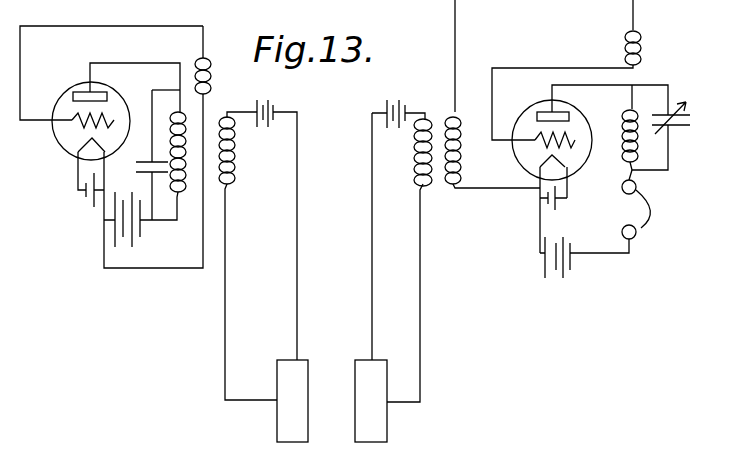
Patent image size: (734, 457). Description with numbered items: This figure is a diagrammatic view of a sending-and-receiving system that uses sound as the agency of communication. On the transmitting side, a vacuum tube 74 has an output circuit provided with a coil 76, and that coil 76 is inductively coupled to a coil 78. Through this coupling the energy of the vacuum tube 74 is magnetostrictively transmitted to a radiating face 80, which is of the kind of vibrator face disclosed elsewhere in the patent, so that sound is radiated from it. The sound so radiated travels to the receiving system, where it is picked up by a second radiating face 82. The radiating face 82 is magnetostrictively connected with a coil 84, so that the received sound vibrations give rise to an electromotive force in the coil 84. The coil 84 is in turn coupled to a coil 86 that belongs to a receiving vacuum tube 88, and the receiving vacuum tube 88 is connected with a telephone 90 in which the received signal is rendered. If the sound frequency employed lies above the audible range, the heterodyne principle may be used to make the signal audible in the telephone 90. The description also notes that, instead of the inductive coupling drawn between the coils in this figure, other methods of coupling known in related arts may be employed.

The vacuum tube 74 is at (65, 151).
The coil 76 is at (180, 196).
The coil 78 is at (230, 178).
The radiating face 80 is at (282, 430).
The radiating face 82 is at (380, 428).
The coil 84 is at (428, 112).
The coil 86 is at (462, 114).
The receiving vacuum tube 88 is at (523, 170).
The telephone 90 is at (650, 228).